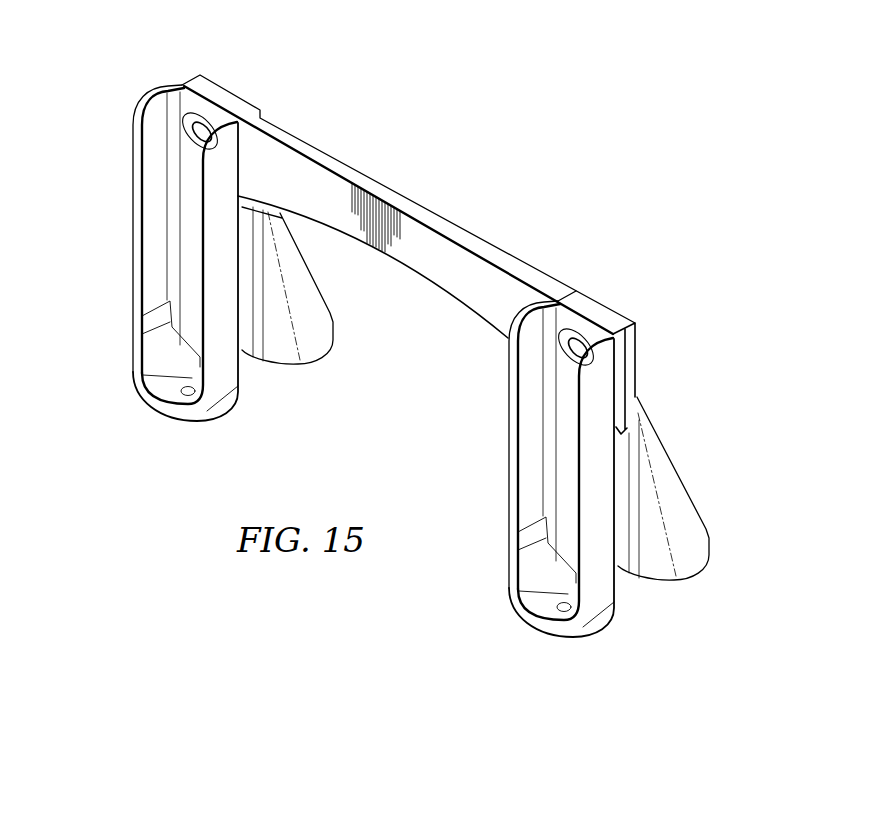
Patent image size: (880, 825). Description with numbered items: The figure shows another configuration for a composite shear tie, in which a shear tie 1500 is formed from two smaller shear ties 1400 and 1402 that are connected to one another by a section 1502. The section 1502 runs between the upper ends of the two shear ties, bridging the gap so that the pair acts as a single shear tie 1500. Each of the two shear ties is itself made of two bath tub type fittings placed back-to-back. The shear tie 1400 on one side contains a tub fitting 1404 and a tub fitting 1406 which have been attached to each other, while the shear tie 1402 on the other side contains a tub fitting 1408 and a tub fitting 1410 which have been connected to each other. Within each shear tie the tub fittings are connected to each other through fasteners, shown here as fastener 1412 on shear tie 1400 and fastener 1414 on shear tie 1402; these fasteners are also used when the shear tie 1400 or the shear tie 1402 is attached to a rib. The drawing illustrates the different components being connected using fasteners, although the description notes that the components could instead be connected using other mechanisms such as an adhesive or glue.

The shear tie 1500 is at (512, 146).
The section 1502 is at (404, 205).
The shear tie 1400 is at (153, 64).
The shear tie 1402 is at (668, 303).
The tub fitting 1404 is at (133, 286).
The tub fitting 1406 is at (310, 348).
The tub fitting 1408 is at (508, 500).
The tub fitting 1410 is at (683, 563).
The fastener 1412 is at (195, 118).
The fastener 1414 is at (571, 336).